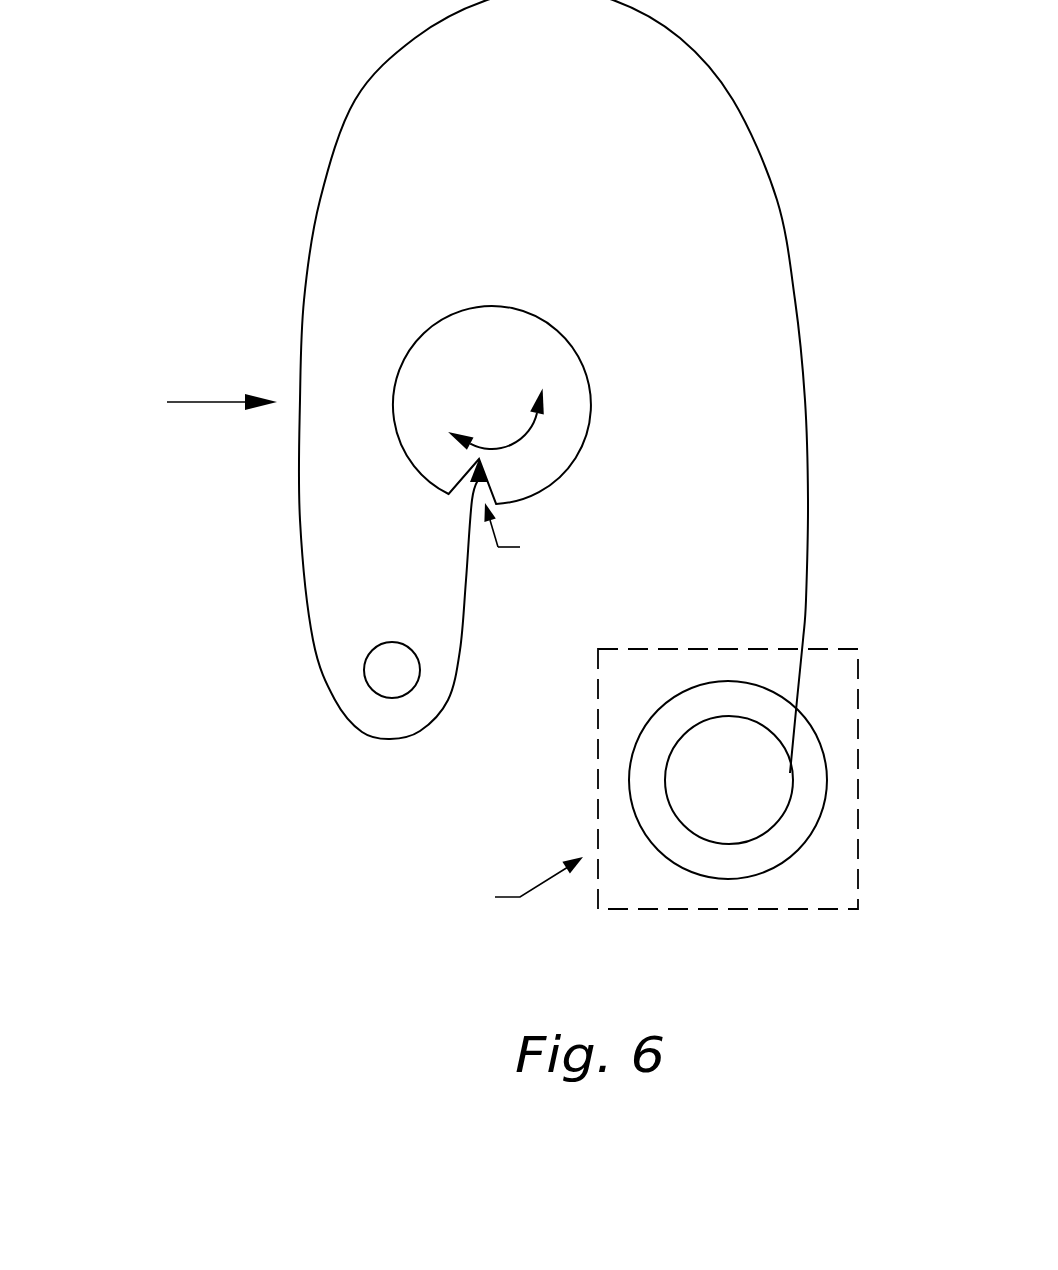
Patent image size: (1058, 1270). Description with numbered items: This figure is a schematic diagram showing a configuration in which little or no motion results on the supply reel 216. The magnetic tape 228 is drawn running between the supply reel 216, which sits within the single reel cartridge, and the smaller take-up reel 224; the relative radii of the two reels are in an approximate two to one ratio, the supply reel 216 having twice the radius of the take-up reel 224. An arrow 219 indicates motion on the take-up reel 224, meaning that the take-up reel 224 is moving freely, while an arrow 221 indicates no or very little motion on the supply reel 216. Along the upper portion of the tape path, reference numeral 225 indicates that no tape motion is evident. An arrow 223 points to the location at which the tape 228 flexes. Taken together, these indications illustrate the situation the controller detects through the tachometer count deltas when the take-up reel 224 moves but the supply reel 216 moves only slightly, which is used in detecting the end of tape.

The supply reel 216 is at (827, 812).
The arrow indicating motion on the take-up reel 219 is at (205, 402).
The arrow indicating no or very little motion on the supply reel 221 is at (530, 888).
The arrow indicating the point at which the tape flexes 223 is at (496, 540).
The take-up reel 224 is at (555, 327).
The indication of no tape motion 225 is at (604, 48).
The magnetic tape 228 is at (808, 502).